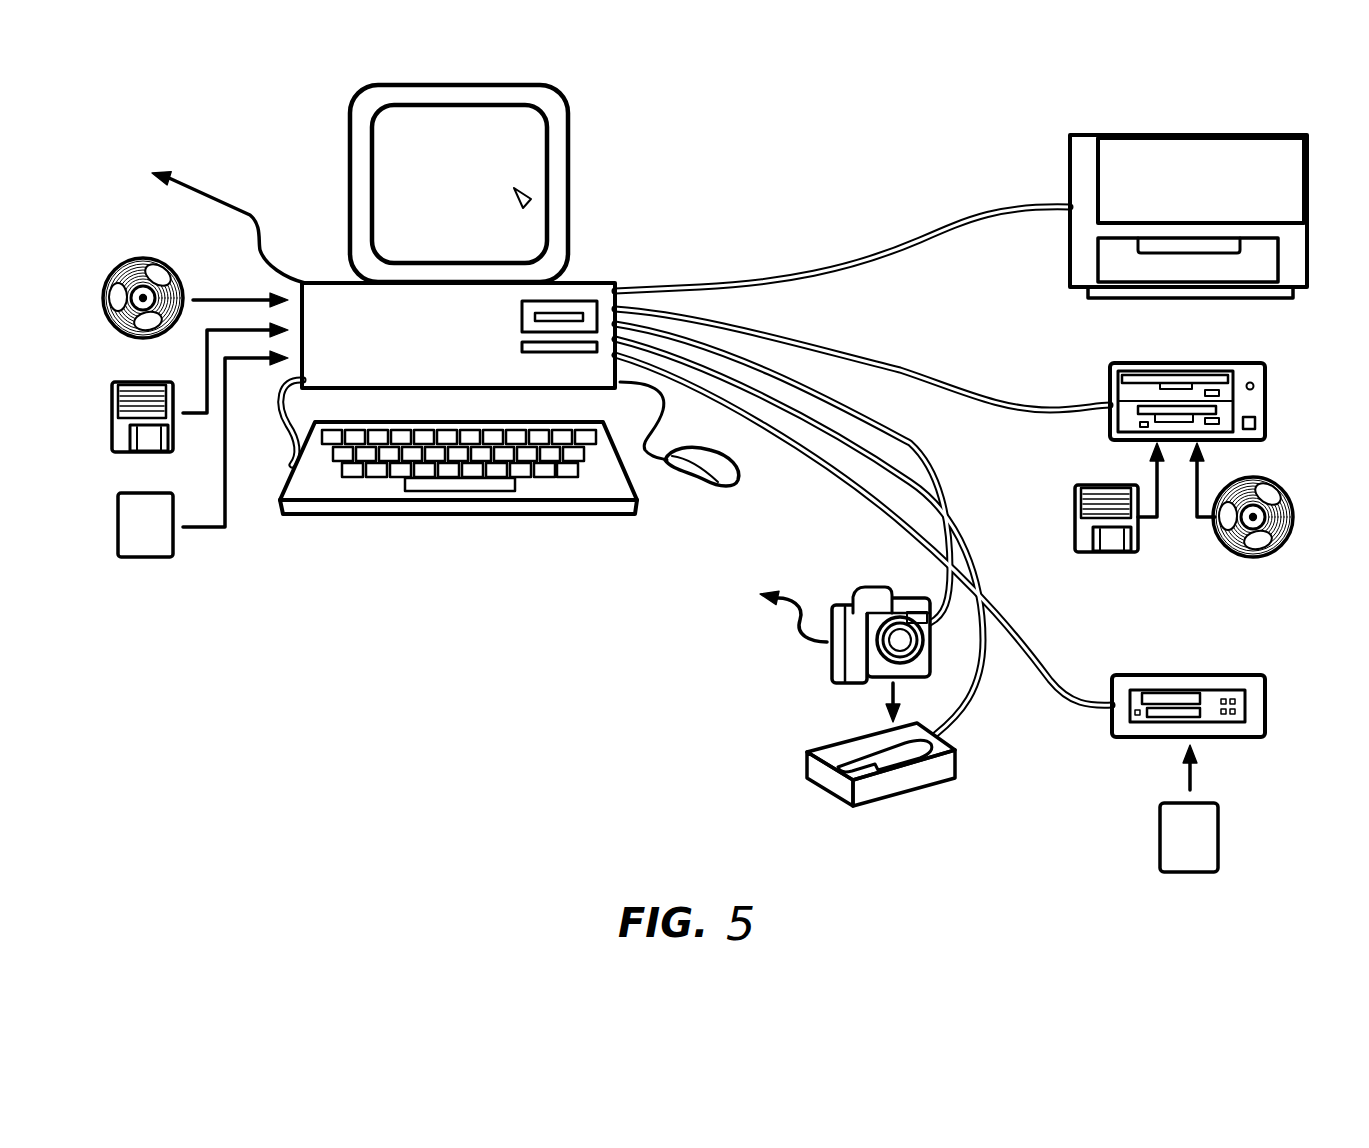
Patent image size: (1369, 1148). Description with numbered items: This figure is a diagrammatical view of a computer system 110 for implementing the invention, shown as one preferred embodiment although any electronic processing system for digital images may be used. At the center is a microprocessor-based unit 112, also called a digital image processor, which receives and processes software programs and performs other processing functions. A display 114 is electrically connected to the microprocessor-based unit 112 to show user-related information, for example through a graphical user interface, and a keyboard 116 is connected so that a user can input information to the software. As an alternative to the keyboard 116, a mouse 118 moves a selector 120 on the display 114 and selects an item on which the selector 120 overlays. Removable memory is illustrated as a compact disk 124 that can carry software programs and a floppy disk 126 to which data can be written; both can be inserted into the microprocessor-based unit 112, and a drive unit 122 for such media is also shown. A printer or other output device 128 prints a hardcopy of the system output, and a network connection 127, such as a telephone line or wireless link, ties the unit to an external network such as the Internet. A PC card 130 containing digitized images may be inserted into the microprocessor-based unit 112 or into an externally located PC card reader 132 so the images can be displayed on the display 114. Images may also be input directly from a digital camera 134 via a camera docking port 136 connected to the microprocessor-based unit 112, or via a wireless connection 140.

The computer system 110 is at (225, 91).
The microprocessor-based unit 112 is at (330, 283).
The display 114 is at (366, 96).
The keyboard 116 is at (372, 514).
The mouse 118 is at (690, 480).
The selector 120 is at (531, 199).
The disk drive unit 122 is at (1268, 394).
The compact disk-read only memory (CD-ROM) 124 is at (103, 300).
The floppy disk 126 is at (112, 420).
The network connection 127 is at (203, 190).
The printer or other output device 128 is at (1178, 135).
The personal computer card (PC card) 130 is at (118, 527).
The PC card reader 132 is at (1268, 705).
The digital camera 134 is at (883, 587).
The camera docking port 136 is at (807, 770).
The wireless connection 140 is at (800, 628).